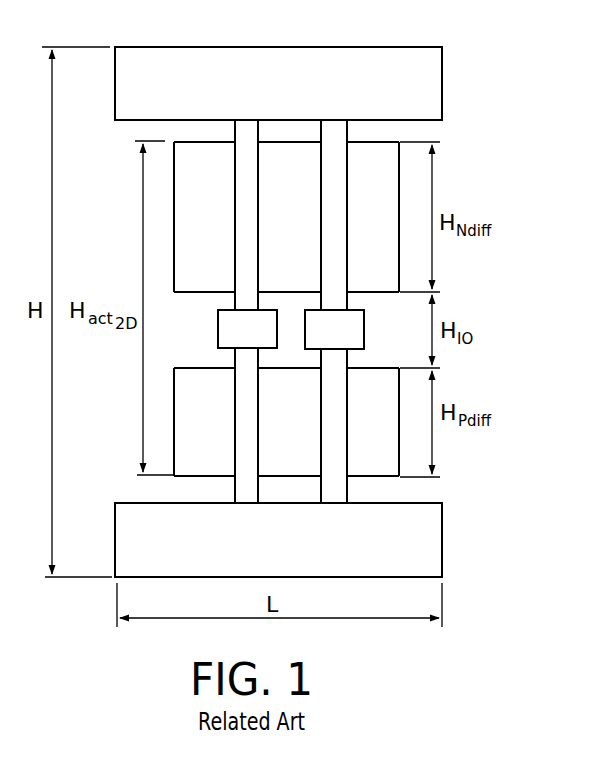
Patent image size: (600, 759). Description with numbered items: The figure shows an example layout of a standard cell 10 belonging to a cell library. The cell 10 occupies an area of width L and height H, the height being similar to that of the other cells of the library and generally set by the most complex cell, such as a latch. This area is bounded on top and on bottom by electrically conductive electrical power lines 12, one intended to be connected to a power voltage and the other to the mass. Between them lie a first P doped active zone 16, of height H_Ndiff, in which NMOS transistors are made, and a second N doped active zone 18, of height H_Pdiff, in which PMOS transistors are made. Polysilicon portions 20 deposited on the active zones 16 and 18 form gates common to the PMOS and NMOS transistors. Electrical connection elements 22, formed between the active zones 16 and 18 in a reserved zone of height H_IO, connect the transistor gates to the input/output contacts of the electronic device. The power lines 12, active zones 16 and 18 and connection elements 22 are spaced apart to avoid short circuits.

The cell 10 is at (493, 53).
The electrical power lines 12 is at (425, 90).
The first P doped active zone 16 is at (393, 168).
The second N doped active zone 18 is at (393, 298).
The polysilicon portions 20 is at (247, 128).
The electrical connection elements 22 is at (230, 328).